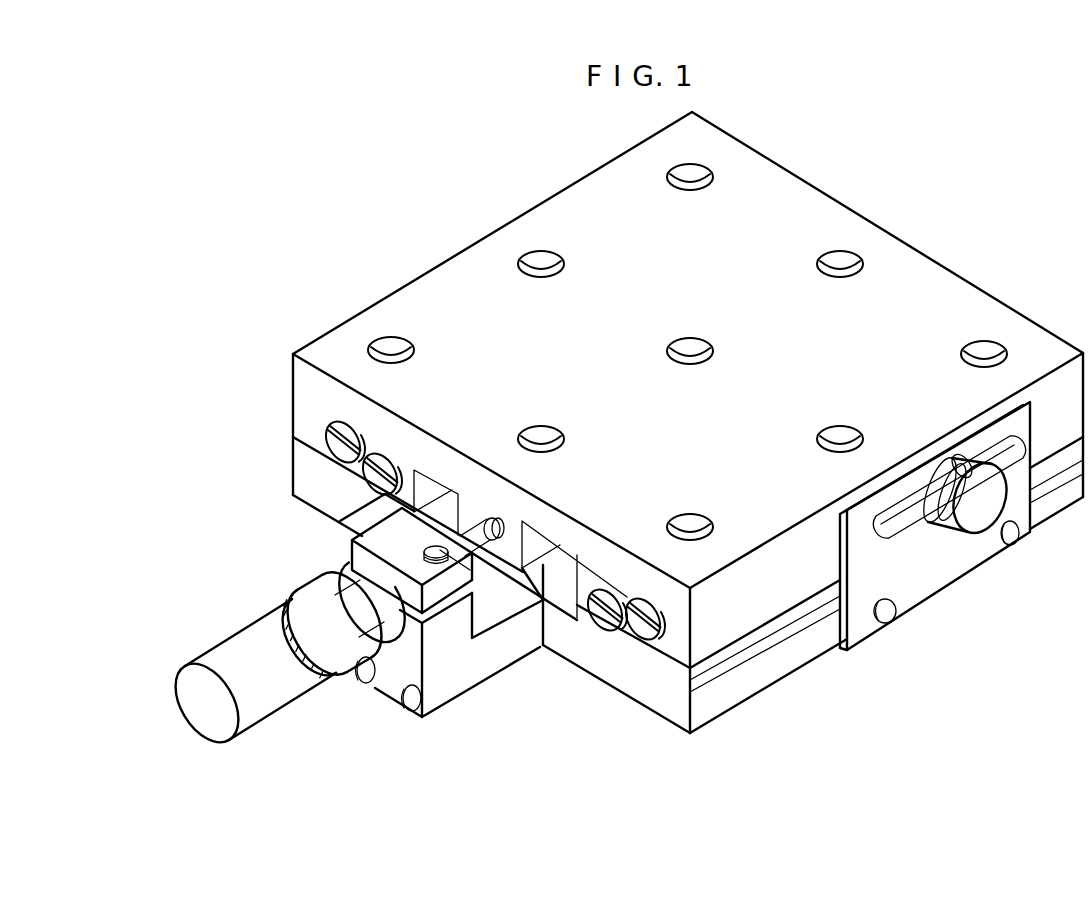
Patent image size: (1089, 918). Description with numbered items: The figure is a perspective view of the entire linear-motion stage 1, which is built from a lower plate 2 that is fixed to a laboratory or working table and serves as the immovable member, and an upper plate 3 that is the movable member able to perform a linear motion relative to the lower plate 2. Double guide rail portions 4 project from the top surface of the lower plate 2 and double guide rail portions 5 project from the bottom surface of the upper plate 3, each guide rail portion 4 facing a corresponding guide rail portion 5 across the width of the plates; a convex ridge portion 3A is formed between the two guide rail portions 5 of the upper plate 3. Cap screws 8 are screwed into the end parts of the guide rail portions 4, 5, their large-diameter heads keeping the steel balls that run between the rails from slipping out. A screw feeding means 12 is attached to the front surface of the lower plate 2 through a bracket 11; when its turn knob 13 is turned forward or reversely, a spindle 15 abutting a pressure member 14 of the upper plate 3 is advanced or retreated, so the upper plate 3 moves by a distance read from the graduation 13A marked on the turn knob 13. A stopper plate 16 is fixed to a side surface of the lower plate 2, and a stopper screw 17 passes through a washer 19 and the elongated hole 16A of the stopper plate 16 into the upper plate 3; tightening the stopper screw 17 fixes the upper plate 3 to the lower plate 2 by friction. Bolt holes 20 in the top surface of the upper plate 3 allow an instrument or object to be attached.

The linear-motion stage 1 is at (497, 202).
The lower plate 2 is at (735, 692).
The upper plate 3 is at (777, 600).
The convex ridge portion 3A is at (477, 513).
The guide rail portions 4 is at (400, 493).
The guide rail portions 5 is at (308, 412).
The cap screw 8 is at (362, 480).
The bracket 11 is at (470, 670).
The screw feeding means 12 is at (295, 682).
The turn knob 13 is at (220, 650).
The graduation 13A is at (298, 606).
The pressure member 14 is at (505, 527).
The spindle 15 is at (479, 540).
The stopper plate 16 is at (958, 570).
The elongated hole 16A is at (897, 533).
The stopper screw 17 is at (985, 525).
The washer 19 is at (957, 455).
The bolt hole 20 is at (702, 345).